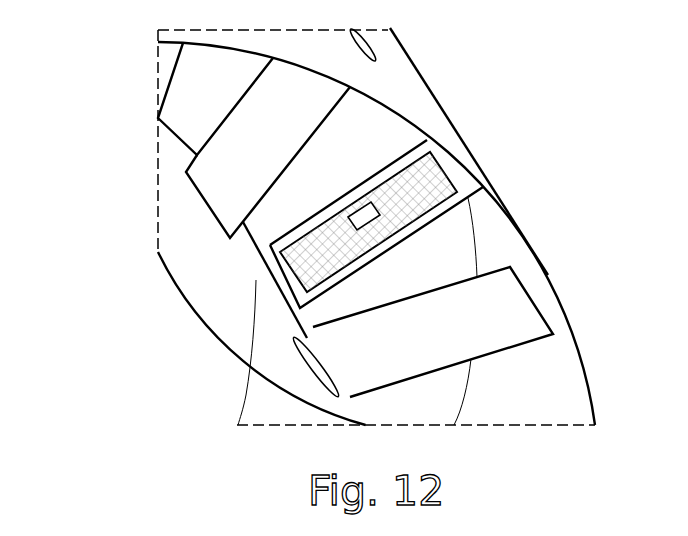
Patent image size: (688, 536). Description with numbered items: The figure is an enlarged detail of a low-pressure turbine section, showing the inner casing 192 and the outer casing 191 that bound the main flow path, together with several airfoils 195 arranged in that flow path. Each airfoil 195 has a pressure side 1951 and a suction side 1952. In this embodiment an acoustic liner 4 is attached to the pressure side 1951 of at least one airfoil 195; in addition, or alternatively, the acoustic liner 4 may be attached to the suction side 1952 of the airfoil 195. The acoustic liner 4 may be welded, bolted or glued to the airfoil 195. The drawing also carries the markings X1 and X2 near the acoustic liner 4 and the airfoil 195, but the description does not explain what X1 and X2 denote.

The outer casing 191 is at (397, 63).
The inner casing 192 is at (187, 230).
The airfoil 195 is at (330, 113).
The pressure side 1951 is at (238, 141).
The suction side 1952 is at (320, 143).
The acoustic liner 4 is at (426, 176).
The first reference line X1 is at (426, 236).
The second reference line X2 is at (313, 308).